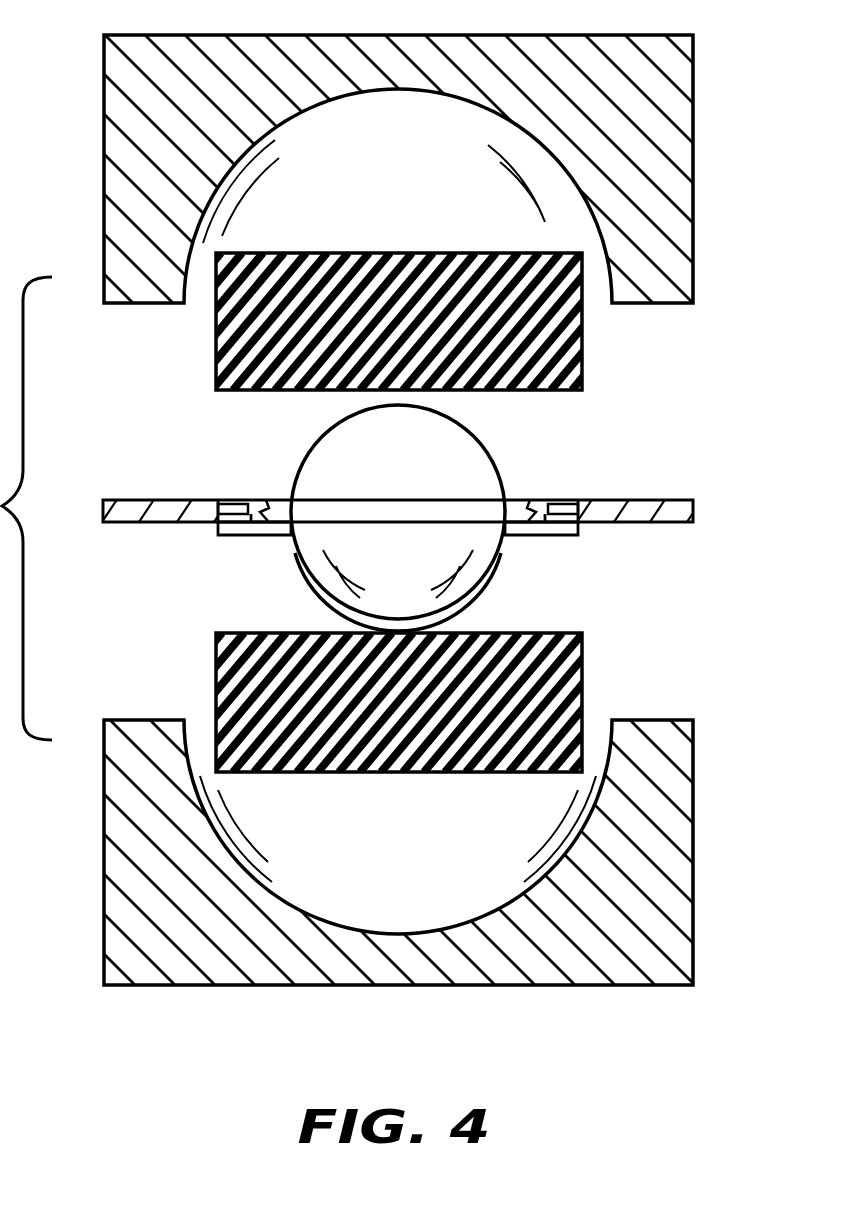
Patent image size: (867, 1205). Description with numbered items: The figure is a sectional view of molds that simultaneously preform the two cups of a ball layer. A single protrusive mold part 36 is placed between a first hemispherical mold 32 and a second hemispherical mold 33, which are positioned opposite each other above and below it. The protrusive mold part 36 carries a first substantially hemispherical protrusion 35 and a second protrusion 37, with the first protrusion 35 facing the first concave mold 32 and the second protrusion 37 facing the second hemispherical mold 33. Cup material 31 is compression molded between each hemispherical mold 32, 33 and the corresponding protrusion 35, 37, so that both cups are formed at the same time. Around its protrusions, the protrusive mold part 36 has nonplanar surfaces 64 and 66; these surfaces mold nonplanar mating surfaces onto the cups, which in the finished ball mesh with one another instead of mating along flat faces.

The cup material 31 is at (582, 330).
The first substantially hemispherical concave mold part 32 is at (693, 827).
The second hemispherical mold 33 is at (694, 181).
The first substantially hemispherical protrusion 35 is at (295, 553).
The protrusive mold part 36 is at (718, 508).
The second protrusion 37 is at (295, 468).
The nonplanar surface 64 is at (562, 535).
The nonplanar surface 66 is at (562, 505).